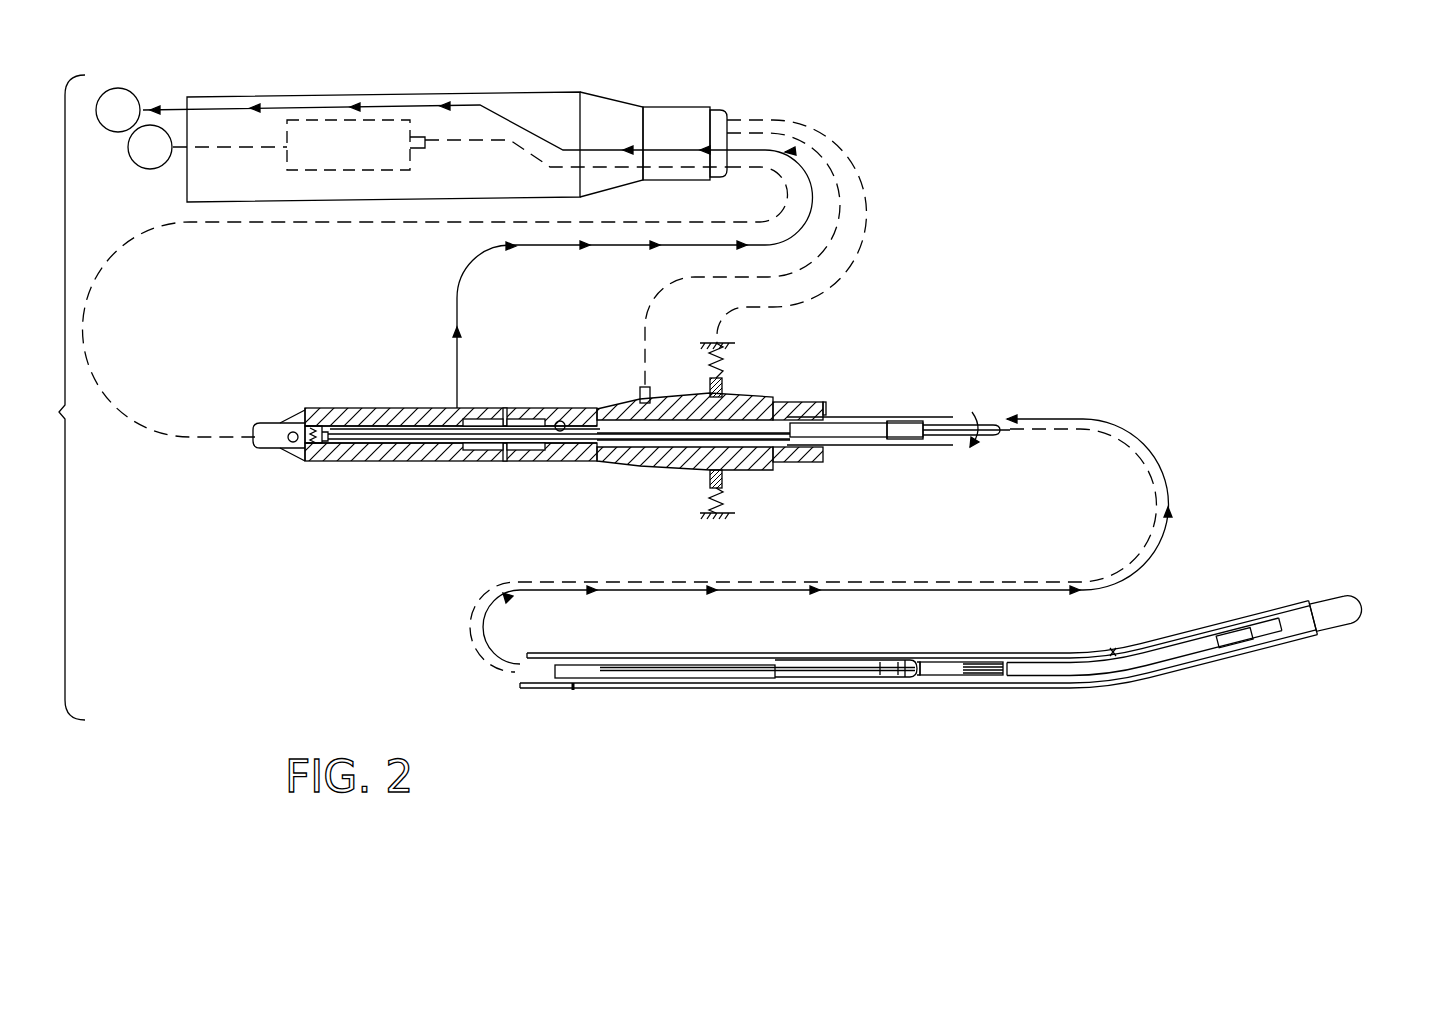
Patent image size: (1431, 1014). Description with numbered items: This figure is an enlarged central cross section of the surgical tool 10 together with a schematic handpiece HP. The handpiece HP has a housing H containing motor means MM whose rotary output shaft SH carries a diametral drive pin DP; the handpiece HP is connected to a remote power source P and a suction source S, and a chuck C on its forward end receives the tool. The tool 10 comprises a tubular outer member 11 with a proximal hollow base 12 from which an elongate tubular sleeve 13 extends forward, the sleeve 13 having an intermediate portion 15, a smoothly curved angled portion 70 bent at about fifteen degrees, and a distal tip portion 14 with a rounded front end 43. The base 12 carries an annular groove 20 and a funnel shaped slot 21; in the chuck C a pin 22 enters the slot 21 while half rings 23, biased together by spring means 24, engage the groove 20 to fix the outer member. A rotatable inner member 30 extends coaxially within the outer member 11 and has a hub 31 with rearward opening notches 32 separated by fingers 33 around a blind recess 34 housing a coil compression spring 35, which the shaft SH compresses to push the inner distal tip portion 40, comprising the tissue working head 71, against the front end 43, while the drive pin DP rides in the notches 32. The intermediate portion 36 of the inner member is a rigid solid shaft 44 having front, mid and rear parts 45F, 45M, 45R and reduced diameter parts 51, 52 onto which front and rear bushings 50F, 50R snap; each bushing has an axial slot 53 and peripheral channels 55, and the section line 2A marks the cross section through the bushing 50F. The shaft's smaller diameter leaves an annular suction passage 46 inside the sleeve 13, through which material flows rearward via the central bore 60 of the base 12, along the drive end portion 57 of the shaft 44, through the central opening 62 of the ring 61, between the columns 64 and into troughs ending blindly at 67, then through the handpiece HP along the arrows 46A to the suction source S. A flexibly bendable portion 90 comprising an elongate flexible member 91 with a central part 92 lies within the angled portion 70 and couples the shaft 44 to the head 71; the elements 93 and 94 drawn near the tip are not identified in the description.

The tool 10 is at (828, 357).
The tubular outer member 11 is at (828, 382).
The proximal hollow base 12 is at (826, 402).
The elongate tubular sleeve 13 is at (880, 417).
The distal tip portion 14 is at (1243, 653).
The intermediate portion 15 is at (733, 690).
The annular groove 20 is at (722, 388).
The funnel shaped slot 21 is at (627, 402).
The pin 22 is at (655, 392).
The half rings 23 is at (722, 392).
The spring means 24 is at (733, 345).
The rotatable inner member 30 is at (410, 477).
The hub 31 is at (382, 463).
The notches 32 is at (305, 408).
The fingers 33 is at (282, 412).
The rear opening recess 34 is at (298, 447).
The coil compression spring 35 is at (323, 463).
The intermediate portion 36 is at (992, 420).
The distal tip portion 40 is at (1297, 633).
The front end 43 is at (1357, 605).
The shaft 44 is at (427, 458).
The rear shaft part 45R is at (657, 435).
The mid shaft part 45M is at (753, 670).
The front shaft part 45F is at (955, 670).
The annular suction passage 46 is at (943, 437).
The arrows 46A is at (198, 108).
The rear bushing 50R is at (912, 438).
The front bushing 50F is at (870, 675).
The reduced diameter shaft part 51 is at (887, 432).
The reduced diameter shaft part 52 is at (880, 672).
The slot 53 is at (898, 673).
The channels 55 is at (905, 660).
The drive end portion 57 is at (363, 430).
The central bore 60 is at (562, 422).
The ring 61 is at (502, 420).
The central opening 62 is at (492, 447).
The columns 64 is at (473, 415).
The blind end 67 is at (347, 447).
The angled portion 70 is at (1110, 683).
The tissue working head 71 is at (1317, 620).
The flexibly bendable portion 90 is at (1113, 650).
The elongate flexible member 91 is at (1140, 645).
The central part 92 is at (1143, 673).
The cutter drive coupling 93 is at (1200, 648).
The distal drive tube 94 is at (1043, 672).
The section line 2A is at (862, 647).
The housing H is at (350, 92).
The handpiece HP is at (634, 357).
The rotary output shaft SH is at (425, 137).
The chuck C is at (668, 107).
The motor means MM is at (300, 162).
The suction source S is at (118, 110).
The power source P is at (207, 147).
The drive pin DP is at (290, 443).